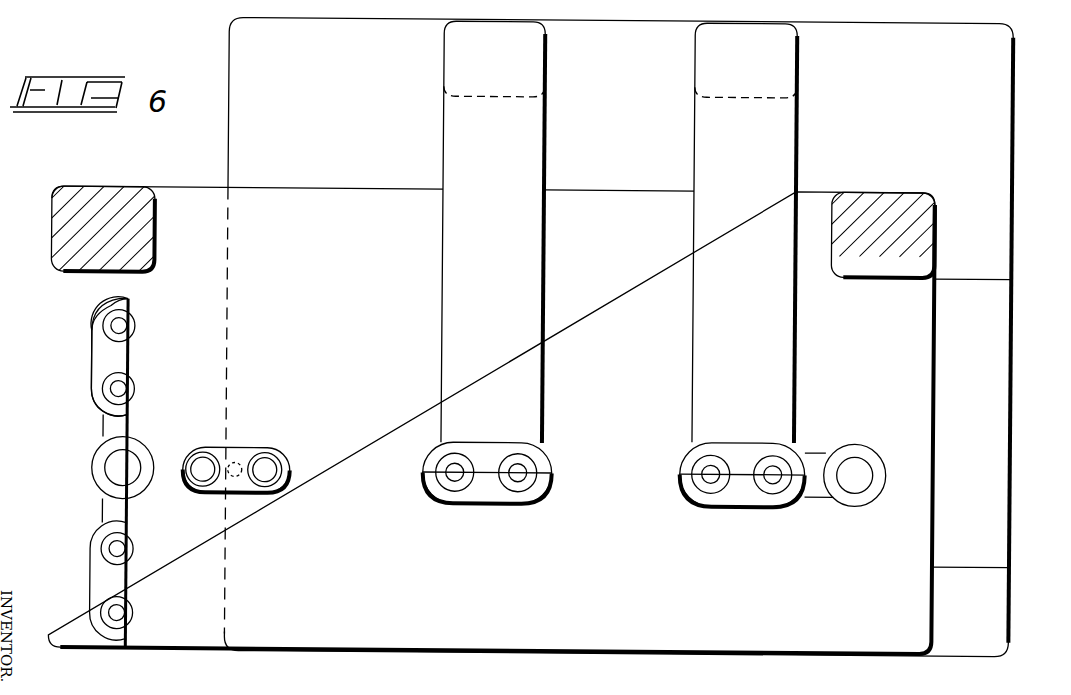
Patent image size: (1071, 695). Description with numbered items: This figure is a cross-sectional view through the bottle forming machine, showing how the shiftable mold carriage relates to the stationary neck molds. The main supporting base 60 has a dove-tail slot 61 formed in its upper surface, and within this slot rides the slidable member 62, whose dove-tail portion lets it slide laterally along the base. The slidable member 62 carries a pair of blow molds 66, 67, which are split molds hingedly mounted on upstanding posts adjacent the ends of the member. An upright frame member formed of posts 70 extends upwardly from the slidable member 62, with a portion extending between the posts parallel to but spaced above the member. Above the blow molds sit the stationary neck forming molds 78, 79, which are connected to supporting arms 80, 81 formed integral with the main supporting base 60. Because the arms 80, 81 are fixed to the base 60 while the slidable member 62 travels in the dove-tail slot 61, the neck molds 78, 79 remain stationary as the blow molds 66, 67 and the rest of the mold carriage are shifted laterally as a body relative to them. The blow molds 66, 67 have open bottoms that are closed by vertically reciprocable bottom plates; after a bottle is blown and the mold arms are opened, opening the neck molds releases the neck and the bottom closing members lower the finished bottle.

The main supporting base 60 is at (992, 66).
The dove-tail slot 61 is at (988, 273).
The slidable member 62 is at (905, 630).
The blow mold 66 is at (818, 437).
The blow mold 67 is at (92, 423).
The posts of upright frame member 70 is at (62, 240).
The stationary neck forming mold 78 is at (549, 443).
The stationary neck forming mold 79 is at (691, 495).
The supporting arm 80 is at (521, 299).
The supporting arm 81 is at (783, 299).